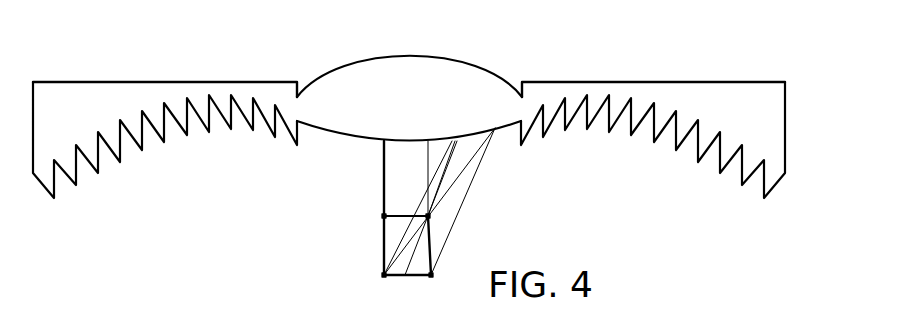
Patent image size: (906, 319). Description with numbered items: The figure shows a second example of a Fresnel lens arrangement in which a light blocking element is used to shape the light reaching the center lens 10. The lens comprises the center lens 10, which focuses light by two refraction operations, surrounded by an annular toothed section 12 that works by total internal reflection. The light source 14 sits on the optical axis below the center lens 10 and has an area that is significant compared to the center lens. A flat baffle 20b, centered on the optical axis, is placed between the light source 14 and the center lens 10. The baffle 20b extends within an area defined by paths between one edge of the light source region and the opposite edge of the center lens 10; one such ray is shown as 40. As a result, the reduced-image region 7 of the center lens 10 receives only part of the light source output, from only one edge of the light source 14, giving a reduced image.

The frame 12 is at (175, 77).
The center lens 10 is at (330, 74).
The reduced-image region 7 is at (412, 137).
The light source 14 is at (406, 277).
The flat baffle 20b is at (387, 217).
The ray 40 is at (458, 172).